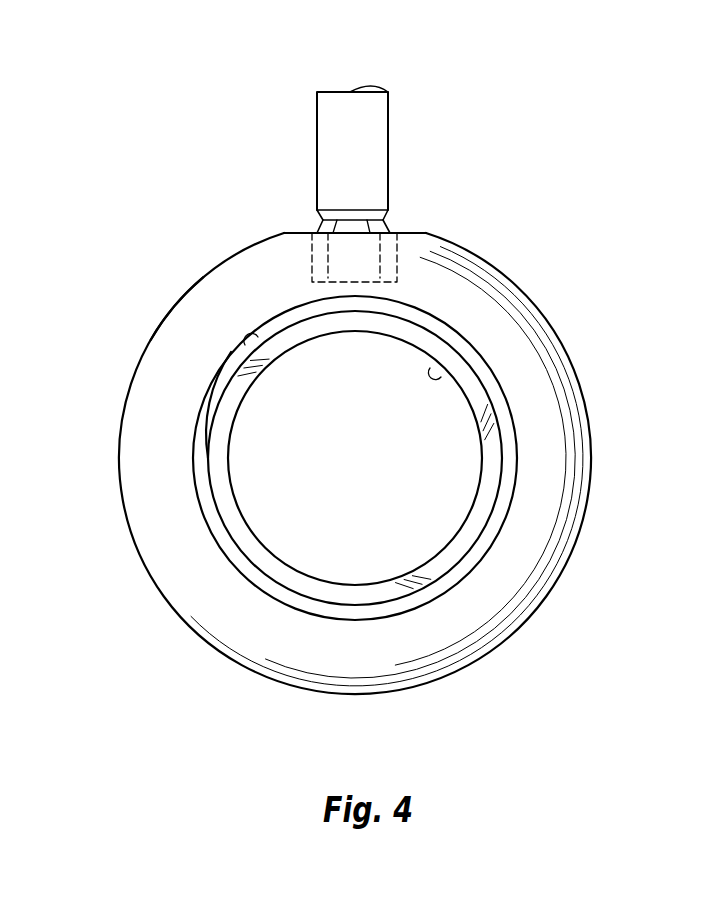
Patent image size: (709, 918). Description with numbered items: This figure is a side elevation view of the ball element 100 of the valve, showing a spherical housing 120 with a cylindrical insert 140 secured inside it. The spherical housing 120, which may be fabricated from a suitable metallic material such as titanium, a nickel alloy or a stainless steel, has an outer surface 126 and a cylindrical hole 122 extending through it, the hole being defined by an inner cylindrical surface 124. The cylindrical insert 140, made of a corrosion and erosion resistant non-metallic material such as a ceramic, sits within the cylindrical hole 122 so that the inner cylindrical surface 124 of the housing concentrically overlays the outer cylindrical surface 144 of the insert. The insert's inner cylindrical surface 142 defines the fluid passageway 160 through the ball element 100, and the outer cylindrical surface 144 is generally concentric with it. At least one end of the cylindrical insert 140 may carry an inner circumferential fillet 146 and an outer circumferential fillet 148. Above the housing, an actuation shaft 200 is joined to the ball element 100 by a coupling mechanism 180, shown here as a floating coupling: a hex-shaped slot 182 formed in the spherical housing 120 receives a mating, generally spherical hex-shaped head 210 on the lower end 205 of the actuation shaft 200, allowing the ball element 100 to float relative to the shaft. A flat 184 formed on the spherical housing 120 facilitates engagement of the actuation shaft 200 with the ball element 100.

The ball element 100 is at (480, 660).
The spherical housing 120 is at (545, 502).
The cylindrical hole 122 is at (309, 483).
The inner cylindrical surface 124 is at (247, 340).
The outer surface 126 is at (135, 372).
The cylindrical insert 140 is at (467, 567).
The inner cylindrical surface 142 is at (440, 385).
The outer cylindrical surface 144 is at (503, 387).
The inner circumferential fillet 146 is at (272, 565).
The outer circumferential fillet 148 is at (222, 533).
The fluid passageway 160 is at (432, 479).
The coupling mechanism 180 is at (310, 218).
The hex-shaped slot 182 is at (397, 258).
The flat 184 is at (300, 232).
The actuation shaft 200 is at (388, 126).
The lower end 205 is at (388, 207).
The hex-shaped head 210 is at (388, 230).